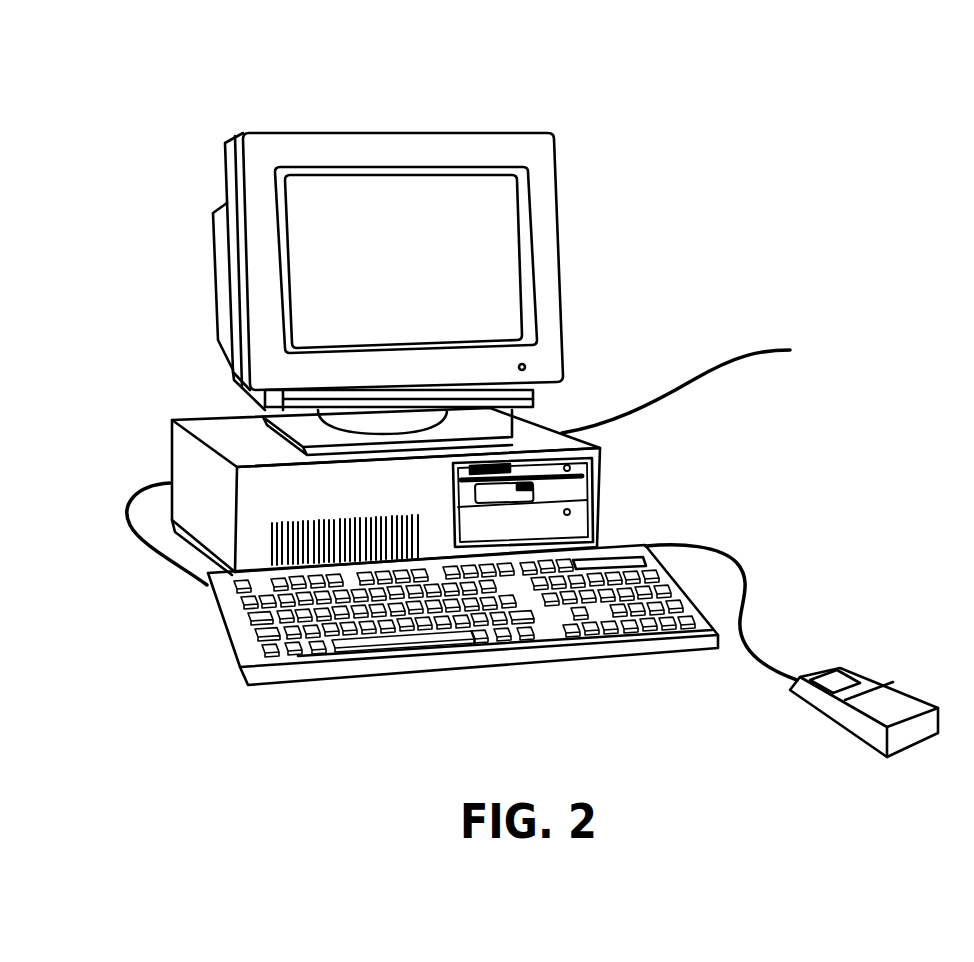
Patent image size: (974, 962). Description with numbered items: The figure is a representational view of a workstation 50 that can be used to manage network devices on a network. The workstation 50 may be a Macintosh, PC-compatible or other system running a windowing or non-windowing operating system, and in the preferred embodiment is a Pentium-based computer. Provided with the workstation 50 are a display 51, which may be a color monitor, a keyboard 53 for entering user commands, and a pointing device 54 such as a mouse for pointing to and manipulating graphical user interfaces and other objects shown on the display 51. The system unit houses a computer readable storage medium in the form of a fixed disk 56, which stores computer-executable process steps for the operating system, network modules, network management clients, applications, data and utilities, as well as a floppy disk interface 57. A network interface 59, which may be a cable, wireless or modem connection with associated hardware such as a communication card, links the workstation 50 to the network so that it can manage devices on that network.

The workstation 50 is at (637, 153).
The display 51 is at (428, 132).
The keyboard 53 is at (327, 653).
The pointing device 54 is at (913, 747).
The fixed disk 56 is at (582, 513).
The floppy disk interface 57 is at (582, 477).
The network interface 59 is at (713, 370).